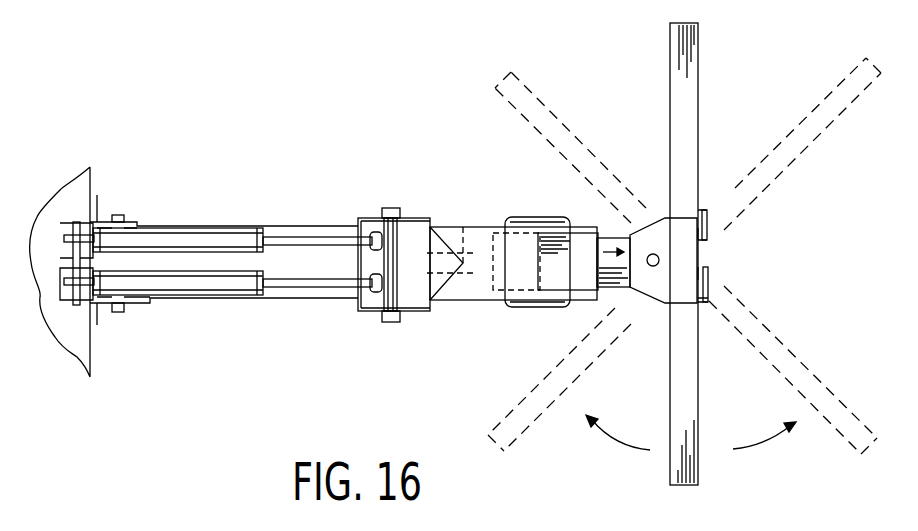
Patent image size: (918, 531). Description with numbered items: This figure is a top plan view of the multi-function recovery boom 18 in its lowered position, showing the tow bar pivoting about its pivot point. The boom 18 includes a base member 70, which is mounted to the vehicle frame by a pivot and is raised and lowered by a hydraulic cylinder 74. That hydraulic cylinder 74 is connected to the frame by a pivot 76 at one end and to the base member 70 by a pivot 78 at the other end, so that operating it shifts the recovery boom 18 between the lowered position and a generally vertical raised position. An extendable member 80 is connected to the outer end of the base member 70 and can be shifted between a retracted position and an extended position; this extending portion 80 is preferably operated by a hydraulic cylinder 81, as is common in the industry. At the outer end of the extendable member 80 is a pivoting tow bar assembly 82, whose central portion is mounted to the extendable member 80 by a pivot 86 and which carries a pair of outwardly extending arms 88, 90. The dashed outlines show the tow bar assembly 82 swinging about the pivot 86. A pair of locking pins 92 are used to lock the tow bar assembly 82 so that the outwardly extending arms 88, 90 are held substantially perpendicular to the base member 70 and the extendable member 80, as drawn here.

The multi-function recovery boom 18 is at (458, 301).
The base member 70 is at (573, 303).
The hydraulic cylinder 74 is at (197, 235).
The pivot 76 is at (73, 224).
The pivot 78 is at (391, 208).
The extendable member 80 is at (605, 296).
The hydraulic cylinder 81 is at (463, 227).
The tow bar assembly 82 is at (699, 255).
The pivot 86 is at (653, 267).
The outwardly extending arm 88 is at (699, 78).
The outwardly extending arm 90 is at (700, 467).
The locking pin 92 is at (712, 212).